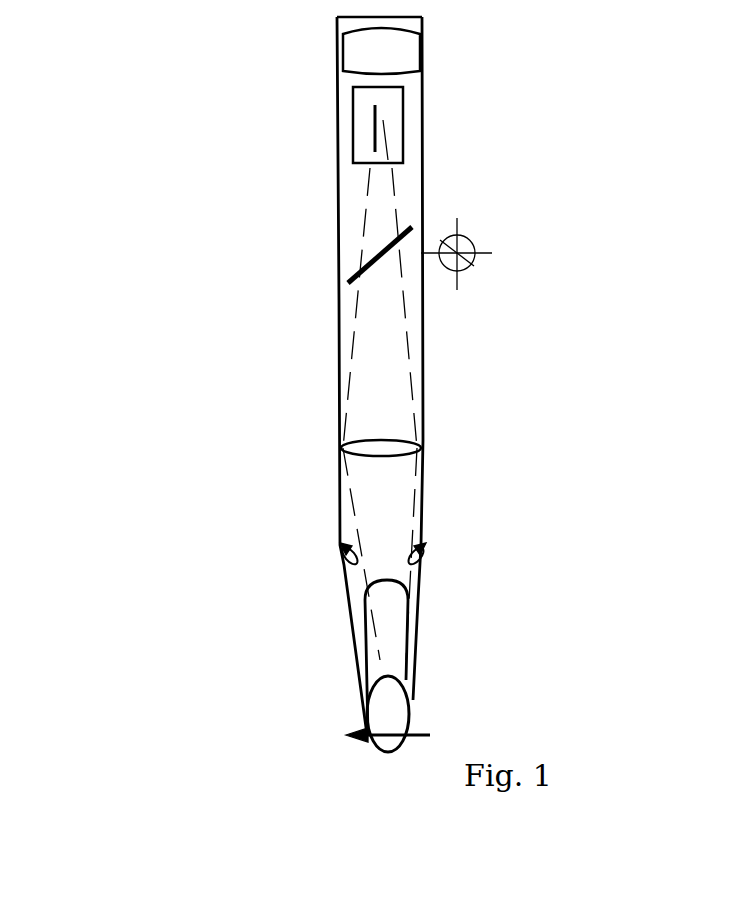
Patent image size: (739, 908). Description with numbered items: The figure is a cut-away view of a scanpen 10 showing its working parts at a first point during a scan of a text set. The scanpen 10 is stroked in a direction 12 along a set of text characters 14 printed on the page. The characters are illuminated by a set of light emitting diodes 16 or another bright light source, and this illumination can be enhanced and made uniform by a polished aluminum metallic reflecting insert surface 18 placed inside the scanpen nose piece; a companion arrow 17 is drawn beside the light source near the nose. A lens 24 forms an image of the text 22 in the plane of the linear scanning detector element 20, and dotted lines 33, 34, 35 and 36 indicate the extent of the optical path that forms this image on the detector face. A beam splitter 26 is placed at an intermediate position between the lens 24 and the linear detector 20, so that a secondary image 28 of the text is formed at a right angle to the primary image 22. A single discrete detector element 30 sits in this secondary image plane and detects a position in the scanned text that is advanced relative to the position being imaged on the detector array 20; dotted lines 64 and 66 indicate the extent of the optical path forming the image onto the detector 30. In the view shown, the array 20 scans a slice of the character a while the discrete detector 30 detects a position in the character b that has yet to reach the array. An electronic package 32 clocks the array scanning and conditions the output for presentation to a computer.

The scanpen 10 is at (337, 365).
The direction 12 is at (420, 731).
The text characters 14 is at (398, 700).
The light emitting diodes 16 is at (433, 543).
The rotation arrow 17 is at (338, 542).
The metallic reflecting insert surface 18 is at (360, 627).
The linear scanning detector element 20 is at (383, 117).
The image of the text 22 is at (385, 138).
The lens 24 is at (383, 448).
The beam splitter 26 is at (367, 247).
The secondary image 28 is at (438, 250).
The single discrete detector element 30 is at (478, 265).
The electronic package 32 is at (390, 47).
The dotted line 33 is at (415, 498).
The dotted line 34 is at (413, 357).
The dotted line 35 is at (355, 517).
The dotted line 36 is at (355, 307).
The dotted line 64 is at (425, 267).
The dotted line 66 is at (428, 243).